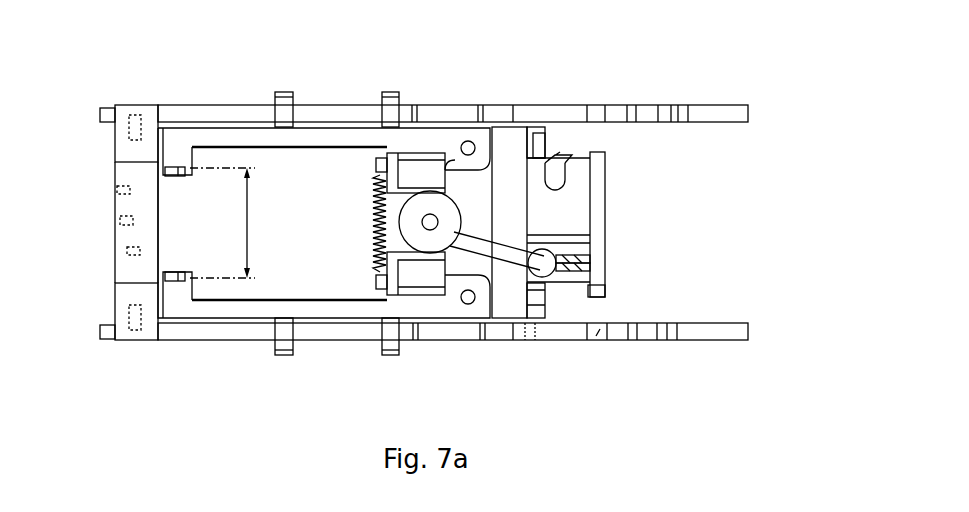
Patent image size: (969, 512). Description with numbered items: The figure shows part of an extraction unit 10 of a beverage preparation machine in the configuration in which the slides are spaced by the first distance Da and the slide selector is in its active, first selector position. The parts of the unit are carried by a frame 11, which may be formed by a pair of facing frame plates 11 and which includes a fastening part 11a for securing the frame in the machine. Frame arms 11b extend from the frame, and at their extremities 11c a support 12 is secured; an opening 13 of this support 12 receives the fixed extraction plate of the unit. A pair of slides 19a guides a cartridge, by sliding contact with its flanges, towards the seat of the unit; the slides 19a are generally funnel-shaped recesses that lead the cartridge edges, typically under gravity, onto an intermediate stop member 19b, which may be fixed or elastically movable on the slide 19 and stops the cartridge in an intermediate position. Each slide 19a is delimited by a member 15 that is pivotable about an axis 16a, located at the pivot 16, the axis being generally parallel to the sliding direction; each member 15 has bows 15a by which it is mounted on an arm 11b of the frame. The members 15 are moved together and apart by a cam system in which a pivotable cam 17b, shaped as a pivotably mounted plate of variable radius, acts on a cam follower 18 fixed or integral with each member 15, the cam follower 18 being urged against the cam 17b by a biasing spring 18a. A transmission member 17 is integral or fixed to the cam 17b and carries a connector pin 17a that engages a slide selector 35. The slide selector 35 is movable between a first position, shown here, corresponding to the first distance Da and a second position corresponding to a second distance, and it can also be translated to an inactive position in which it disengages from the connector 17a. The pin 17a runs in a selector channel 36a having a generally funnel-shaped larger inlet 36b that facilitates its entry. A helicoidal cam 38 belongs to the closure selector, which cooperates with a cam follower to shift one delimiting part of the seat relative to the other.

The unit 10 is at (728, 53).
The frame 11 is at (717, 121).
The fastening part 11a is at (575, 115).
The frame arms 11b is at (225, 115).
The extremities of frame arms 11c is at (107, 113).
The support 12 is at (127, 147).
The opening 13 is at (130, 165).
The member 15 is at (283, 140).
The bows 15a is at (388, 105).
The pivot hole 16 is at (466, 130).
The axis 16a is at (470, 146).
The transmission member 17 is at (490, 245).
The connector pin 17a is at (544, 262).
The pivotable cam 17b is at (442, 207).
The cam follower 18 is at (417, 188).
The biasing spring 18a is at (378, 217).
The slide 19 is at (178, 147).
The slides 19a is at (173, 174).
The intermediate stop member 19b is at (184, 174).
The slide selector 35 is at (600, 190).
The selector channel 36a is at (584, 259).
The larger inlet 36b is at (584, 269).
The helicoidal cam 38 is at (560, 162).